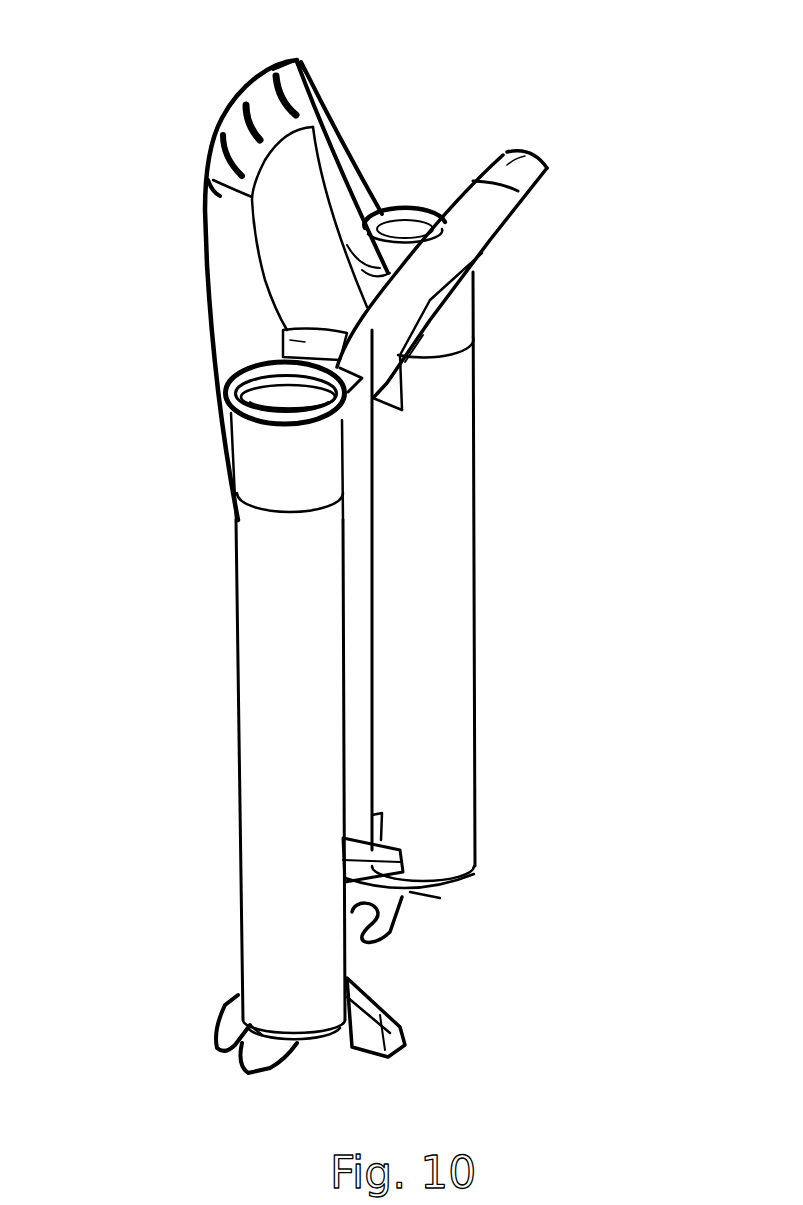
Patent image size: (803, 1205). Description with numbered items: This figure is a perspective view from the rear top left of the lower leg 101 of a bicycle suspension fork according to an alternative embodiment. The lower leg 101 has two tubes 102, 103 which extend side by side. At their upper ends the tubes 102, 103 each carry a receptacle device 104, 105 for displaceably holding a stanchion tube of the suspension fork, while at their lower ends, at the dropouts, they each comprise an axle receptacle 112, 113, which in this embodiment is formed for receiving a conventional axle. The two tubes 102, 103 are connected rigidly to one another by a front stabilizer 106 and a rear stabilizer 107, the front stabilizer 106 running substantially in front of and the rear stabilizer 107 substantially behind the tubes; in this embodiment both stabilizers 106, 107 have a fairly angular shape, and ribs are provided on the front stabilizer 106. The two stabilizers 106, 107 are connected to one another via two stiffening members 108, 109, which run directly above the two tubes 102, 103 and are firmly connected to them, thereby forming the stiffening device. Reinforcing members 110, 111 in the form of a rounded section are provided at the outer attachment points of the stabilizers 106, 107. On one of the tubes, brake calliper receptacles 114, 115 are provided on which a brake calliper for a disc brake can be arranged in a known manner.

The lower leg 101 is at (170, 755).
The tube 102 is at (441, 458).
The tube 103 is at (317, 707).
The receptacle device for stanchion tube 104 is at (415, 220).
The receptacle device for stanchion tube 105 is at (290, 418).
The front stabilizer 106 is at (258, 108).
The rear stabilizer 107 is at (517, 173).
The stiffening member 108 is at (373, 257).
The stiffening member 109 is at (302, 342).
The reinforcing member 110 is at (377, 213).
The reinforcing member 111 is at (235, 388).
The axle receptacle 112 is at (380, 915).
The axle receptacle 113 is at (235, 1023).
The brake calliper receptacle 114 is at (402, 853).
The brake calliper receptacle 115 is at (403, 1033).